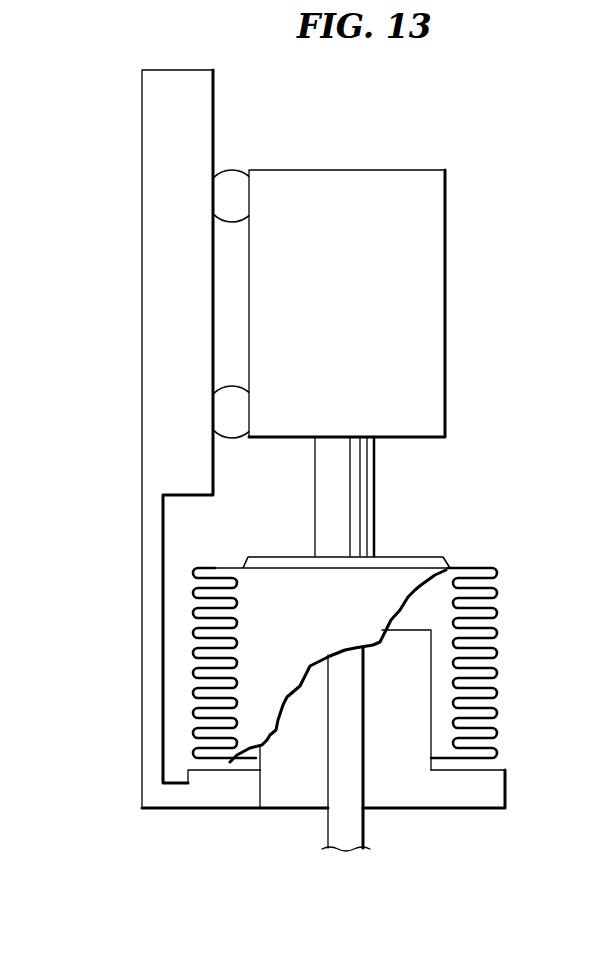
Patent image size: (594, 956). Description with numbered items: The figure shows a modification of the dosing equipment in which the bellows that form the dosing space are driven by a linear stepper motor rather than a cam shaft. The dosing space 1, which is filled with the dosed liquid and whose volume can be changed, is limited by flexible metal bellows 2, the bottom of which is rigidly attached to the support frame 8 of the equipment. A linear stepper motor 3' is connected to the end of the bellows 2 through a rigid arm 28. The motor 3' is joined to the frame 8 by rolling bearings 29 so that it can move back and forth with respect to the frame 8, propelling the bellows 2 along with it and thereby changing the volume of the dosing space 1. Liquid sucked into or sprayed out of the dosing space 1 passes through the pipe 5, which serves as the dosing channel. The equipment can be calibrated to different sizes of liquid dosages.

The dosing space 1 is at (445, 572).
The flexible metal bellows 2 is at (493, 633).
The linear stepper motor 3' is at (373, 303).
The pipe 5 is at (355, 825).
The support frame 8 is at (213, 85).
The rigid arm 28 is at (372, 484).
The rolling bearings 29 is at (232, 178).